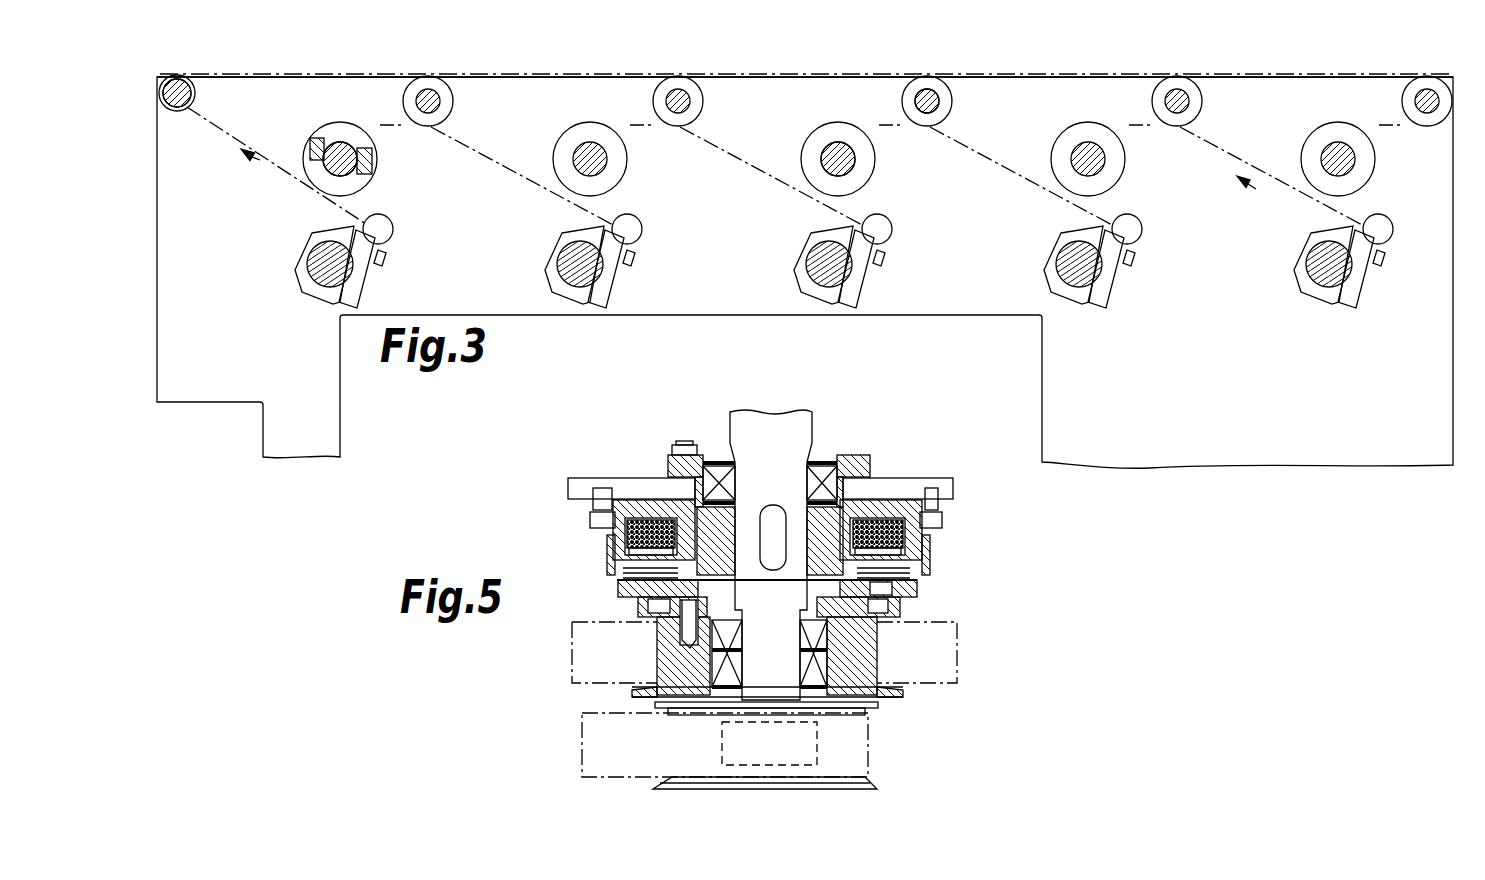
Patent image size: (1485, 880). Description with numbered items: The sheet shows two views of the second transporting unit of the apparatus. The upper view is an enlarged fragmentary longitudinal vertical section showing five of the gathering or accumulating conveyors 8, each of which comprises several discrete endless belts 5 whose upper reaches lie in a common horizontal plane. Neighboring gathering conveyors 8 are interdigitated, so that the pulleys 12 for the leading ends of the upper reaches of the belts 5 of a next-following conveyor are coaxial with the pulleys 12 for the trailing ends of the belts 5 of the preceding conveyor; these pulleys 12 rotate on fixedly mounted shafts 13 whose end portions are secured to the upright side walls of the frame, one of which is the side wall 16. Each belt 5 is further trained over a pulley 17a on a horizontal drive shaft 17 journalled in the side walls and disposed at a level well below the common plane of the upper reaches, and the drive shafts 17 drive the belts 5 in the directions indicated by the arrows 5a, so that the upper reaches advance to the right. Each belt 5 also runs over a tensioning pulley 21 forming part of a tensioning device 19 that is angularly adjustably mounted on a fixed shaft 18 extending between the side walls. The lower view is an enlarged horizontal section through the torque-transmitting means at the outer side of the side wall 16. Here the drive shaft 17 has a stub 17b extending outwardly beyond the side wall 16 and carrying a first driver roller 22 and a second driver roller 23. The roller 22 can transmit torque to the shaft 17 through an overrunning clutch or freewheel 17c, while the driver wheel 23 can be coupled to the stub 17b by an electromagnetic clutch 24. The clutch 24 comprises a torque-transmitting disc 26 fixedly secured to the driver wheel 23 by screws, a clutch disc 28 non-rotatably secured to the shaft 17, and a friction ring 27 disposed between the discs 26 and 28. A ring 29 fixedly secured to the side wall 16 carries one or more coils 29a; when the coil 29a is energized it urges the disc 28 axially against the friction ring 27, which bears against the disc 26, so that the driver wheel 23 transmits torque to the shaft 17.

In FIG. 3, the endless belt 5 is at (280, 183).
In FIG. 3, the arrow 5a is at (263, 158).
In FIG. 3, the gathering conveyor 8 is at (796, 72).
In FIG. 3, the pulley 12 is at (212, 77).
In FIG. 3, the shaft 13 is at (197, 97).
In FIG. 5, the side wall 16 is at (635, 483).
In FIG. 3, the drive shaft 17 is at (352, 170).
In FIG. 5, the drive shaft 17 is at (800, 432).
In FIG. 3, the pulley 17a is at (341, 131).
In FIG. 5, the stub 17b is at (787, 657).
In FIG. 5, the overrunning clutch 17c is at (765, 765).
In FIG. 3, the fixed shaft 18 is at (562, 252).
In FIG. 3, the tensioning device 19 is at (617, 268).
In FIG. 3, the tensioning pulley 21 is at (643, 229).
In FIG. 5, the first driver roller 22 is at (877, 785).
In FIG. 5, the second driver roller 23 is at (633, 690).
In FIG. 5, the electromagnetic clutch 24 is at (963, 560).
In FIG. 5, the torque-transmitting disc 26 is at (915, 585).
In FIG. 5, the friction ring 27 is at (622, 575).
In FIG. 5, the clutch disc 28 is at (608, 545).
In FIG. 5, the ring 29 is at (940, 507).
In FIG. 5, the coil 29a is at (883, 523).